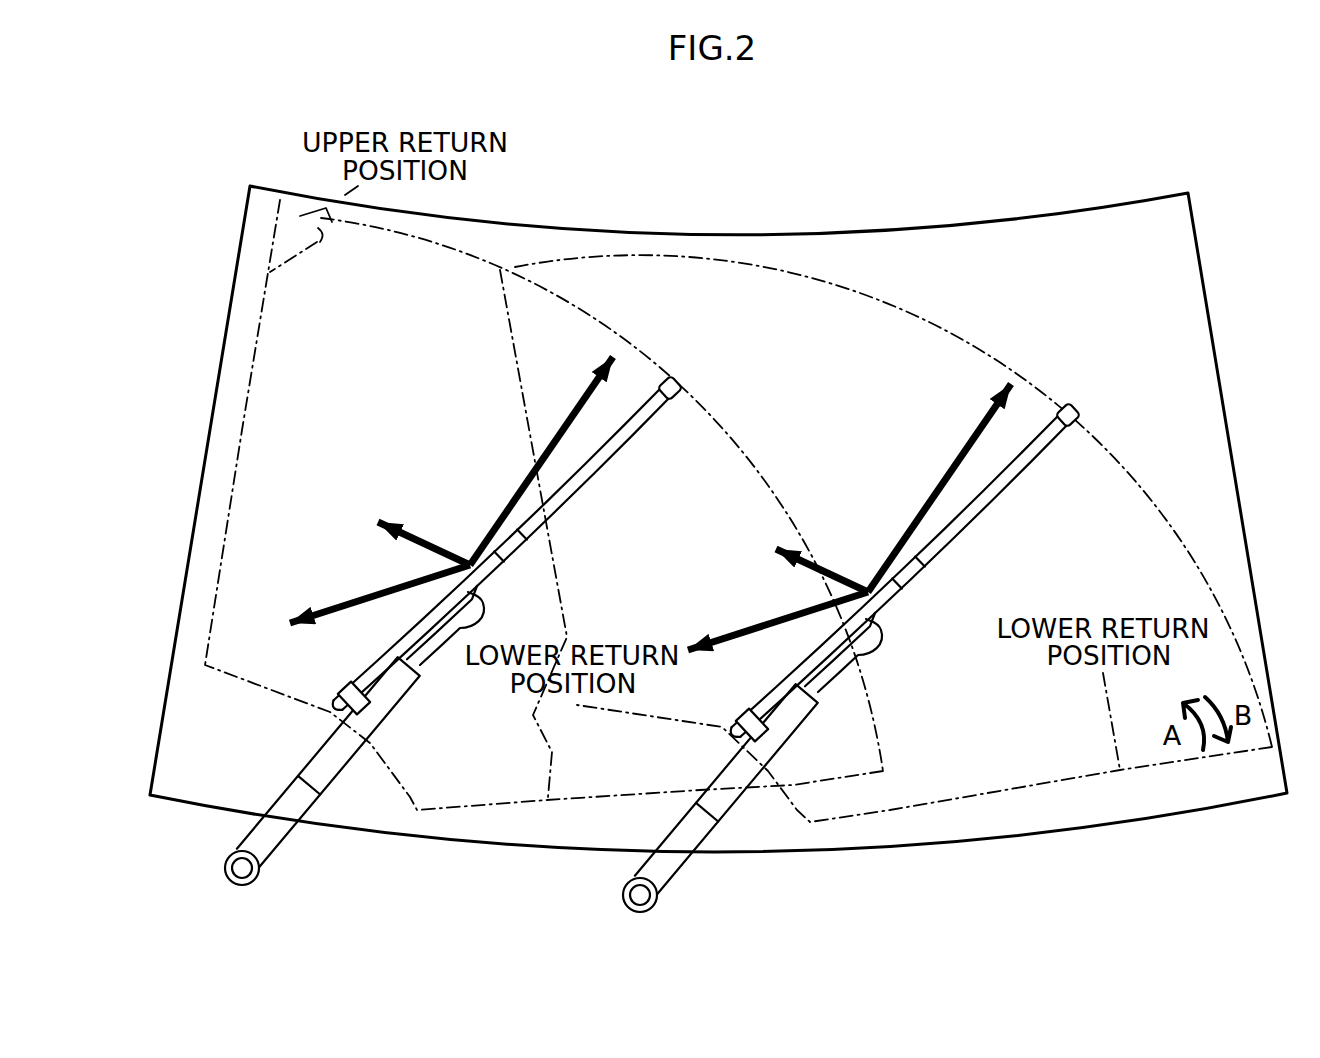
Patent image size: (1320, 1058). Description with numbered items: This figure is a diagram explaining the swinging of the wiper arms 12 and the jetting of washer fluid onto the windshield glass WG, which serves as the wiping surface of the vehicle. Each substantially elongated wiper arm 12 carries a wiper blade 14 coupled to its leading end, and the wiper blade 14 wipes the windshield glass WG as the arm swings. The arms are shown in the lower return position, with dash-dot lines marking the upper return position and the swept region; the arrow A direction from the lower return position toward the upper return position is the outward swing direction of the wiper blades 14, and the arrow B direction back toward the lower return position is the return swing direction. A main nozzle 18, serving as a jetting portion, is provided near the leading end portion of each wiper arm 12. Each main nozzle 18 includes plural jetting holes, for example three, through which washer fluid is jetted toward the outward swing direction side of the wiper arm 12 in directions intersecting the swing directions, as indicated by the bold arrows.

The wiper arm 12 is at (521, 784).
The wiper blade 14 is at (707, 537).
The main nozzle 18 is at (644, 592).
The windshield glass WG is at (1151, 218).